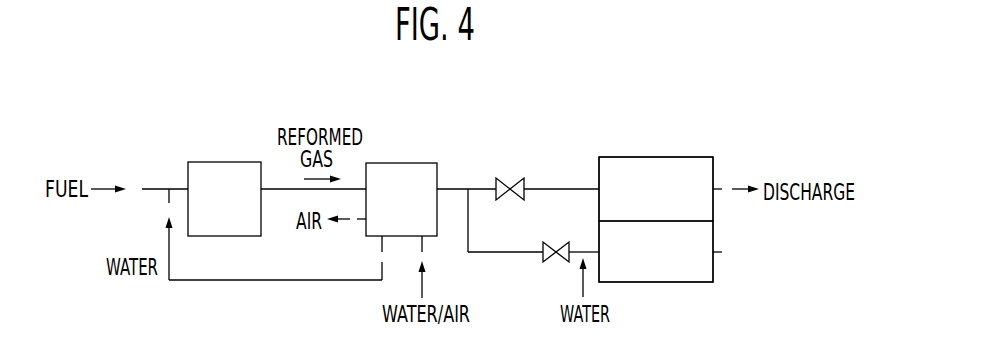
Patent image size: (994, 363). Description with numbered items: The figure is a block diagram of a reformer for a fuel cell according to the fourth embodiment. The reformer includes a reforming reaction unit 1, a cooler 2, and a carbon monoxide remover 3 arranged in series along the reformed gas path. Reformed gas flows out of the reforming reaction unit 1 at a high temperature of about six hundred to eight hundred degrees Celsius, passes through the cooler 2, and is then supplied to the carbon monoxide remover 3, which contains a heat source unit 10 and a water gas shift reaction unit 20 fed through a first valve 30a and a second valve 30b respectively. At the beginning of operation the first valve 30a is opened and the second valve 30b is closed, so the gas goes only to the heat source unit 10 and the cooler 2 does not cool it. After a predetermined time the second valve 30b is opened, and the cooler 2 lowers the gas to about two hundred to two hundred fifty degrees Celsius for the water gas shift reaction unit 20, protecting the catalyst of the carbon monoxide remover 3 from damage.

The reforming reaction unit 1 is at (222, 162).
The cooler 2 is at (399, 163).
The carbon monoxide remover 3 is at (705, 127).
The heat source unit 10 is at (652, 157).
The water gas shift reaction unit 20 is at (652, 282).
The first valve 30a is at (523, 178).
The second valve 30b is at (546, 262).